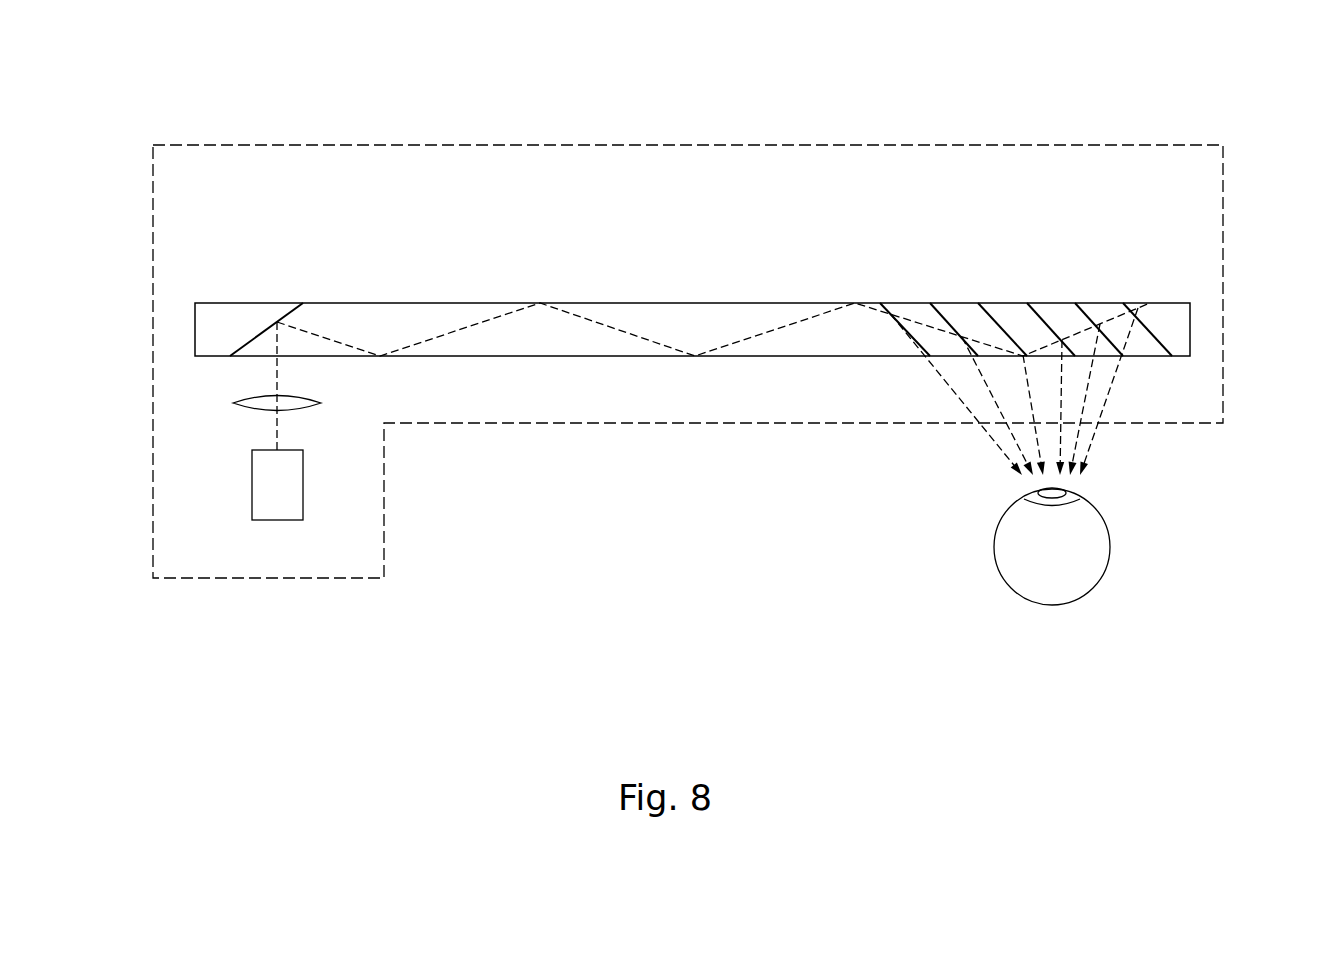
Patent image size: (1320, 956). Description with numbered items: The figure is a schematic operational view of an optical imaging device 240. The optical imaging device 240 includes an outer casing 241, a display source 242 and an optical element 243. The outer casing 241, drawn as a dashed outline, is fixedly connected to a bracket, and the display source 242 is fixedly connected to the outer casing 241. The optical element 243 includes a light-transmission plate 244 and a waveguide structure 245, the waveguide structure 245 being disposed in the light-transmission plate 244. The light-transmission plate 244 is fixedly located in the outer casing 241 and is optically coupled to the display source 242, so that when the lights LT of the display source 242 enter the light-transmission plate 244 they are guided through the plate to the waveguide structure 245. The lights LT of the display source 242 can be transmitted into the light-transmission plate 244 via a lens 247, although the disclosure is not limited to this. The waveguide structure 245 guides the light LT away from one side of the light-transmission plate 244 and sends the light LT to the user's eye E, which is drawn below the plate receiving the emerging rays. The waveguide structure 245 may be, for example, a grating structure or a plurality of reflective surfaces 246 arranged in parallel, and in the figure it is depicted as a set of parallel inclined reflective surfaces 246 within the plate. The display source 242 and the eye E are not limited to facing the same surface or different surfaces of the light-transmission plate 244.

The optical imaging device 240 is at (1273, 77).
The outer casing 241 is at (1203, 207).
The display source 242 is at (278, 510).
The optical element 243 is at (1053, 205).
The light-transmission plate 244 is at (748, 322).
The waveguide structure 245 is at (1148, 245).
The reflective surfaces 246 is at (948, 303).
The lens 247 is at (250, 404).
The lights LT is at (620, 330).
The eye of user E is at (1055, 588).